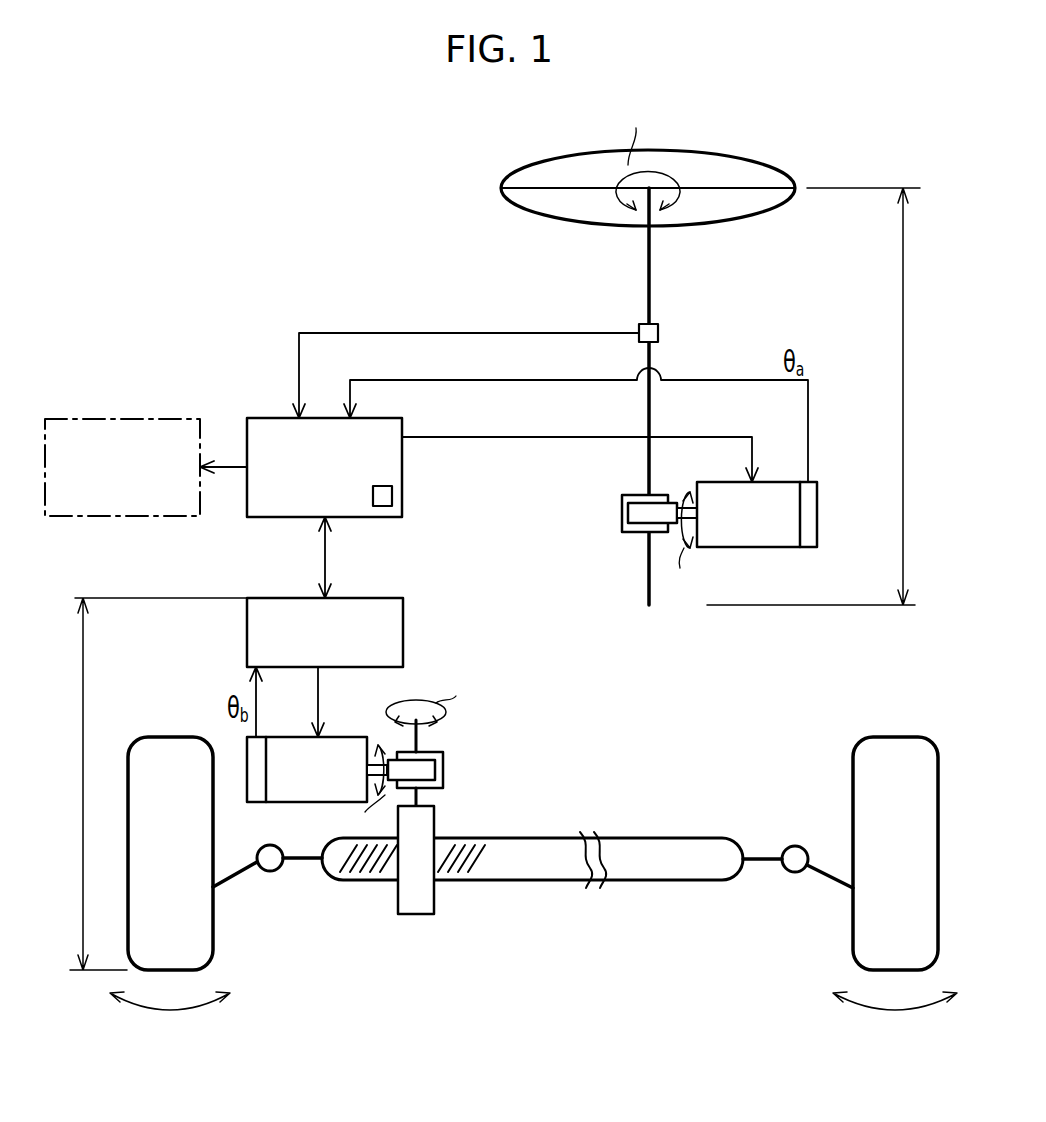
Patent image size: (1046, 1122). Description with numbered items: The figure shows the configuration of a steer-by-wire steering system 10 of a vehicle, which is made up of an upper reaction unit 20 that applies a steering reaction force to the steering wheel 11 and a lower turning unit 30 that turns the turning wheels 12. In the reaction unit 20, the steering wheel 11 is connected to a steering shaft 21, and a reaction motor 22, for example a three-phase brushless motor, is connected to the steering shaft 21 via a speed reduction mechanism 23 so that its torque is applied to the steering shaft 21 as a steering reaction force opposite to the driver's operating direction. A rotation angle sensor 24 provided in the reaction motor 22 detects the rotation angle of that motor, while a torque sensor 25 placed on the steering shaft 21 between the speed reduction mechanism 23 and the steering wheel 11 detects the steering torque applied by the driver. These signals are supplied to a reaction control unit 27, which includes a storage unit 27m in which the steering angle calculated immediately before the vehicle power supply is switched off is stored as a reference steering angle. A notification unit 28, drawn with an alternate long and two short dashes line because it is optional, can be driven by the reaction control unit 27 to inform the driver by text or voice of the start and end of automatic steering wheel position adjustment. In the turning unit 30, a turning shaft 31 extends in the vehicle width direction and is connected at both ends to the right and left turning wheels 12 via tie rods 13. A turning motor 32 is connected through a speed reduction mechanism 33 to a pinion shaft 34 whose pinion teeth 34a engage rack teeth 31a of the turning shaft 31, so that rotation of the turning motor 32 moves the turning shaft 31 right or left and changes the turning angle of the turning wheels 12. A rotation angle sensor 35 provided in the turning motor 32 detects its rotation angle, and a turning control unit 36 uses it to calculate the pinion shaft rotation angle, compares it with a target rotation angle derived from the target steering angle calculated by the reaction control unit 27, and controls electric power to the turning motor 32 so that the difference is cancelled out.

The steering system 10 is at (824, 147).
The steering wheel 11 is at (738, 152).
The turning wheels 12 is at (213, 937).
The tie rods 13 is at (303, 862).
The reaction unit 20 is at (903, 428).
The steering shaft 21 is at (652, 250).
The reaction motor 22 is at (778, 547).
The speed reduction mechanism 23 is at (615, 500).
The rotation angle sensor 24 is at (808, 547).
The torque sensor 25 is at (660, 333).
The reaction control unit 27 is at (356, 452).
The storage unit 27m is at (392, 496).
The notification unit 28 is at (135, 419).
The turning unit 30 is at (83, 786).
The turning shaft 31 is at (532, 887).
The rack teeth 31a is at (450, 868).
The turning motor 32 is at (352, 737).
The speed reduction mechanism 33 is at (450, 790).
The pinion shaft 34 is at (434, 826).
The pinion teeth 34a is at (416, 914).
The rotation angle sensor 35 is at (246, 782).
The turning control unit 36 is at (247, 638).